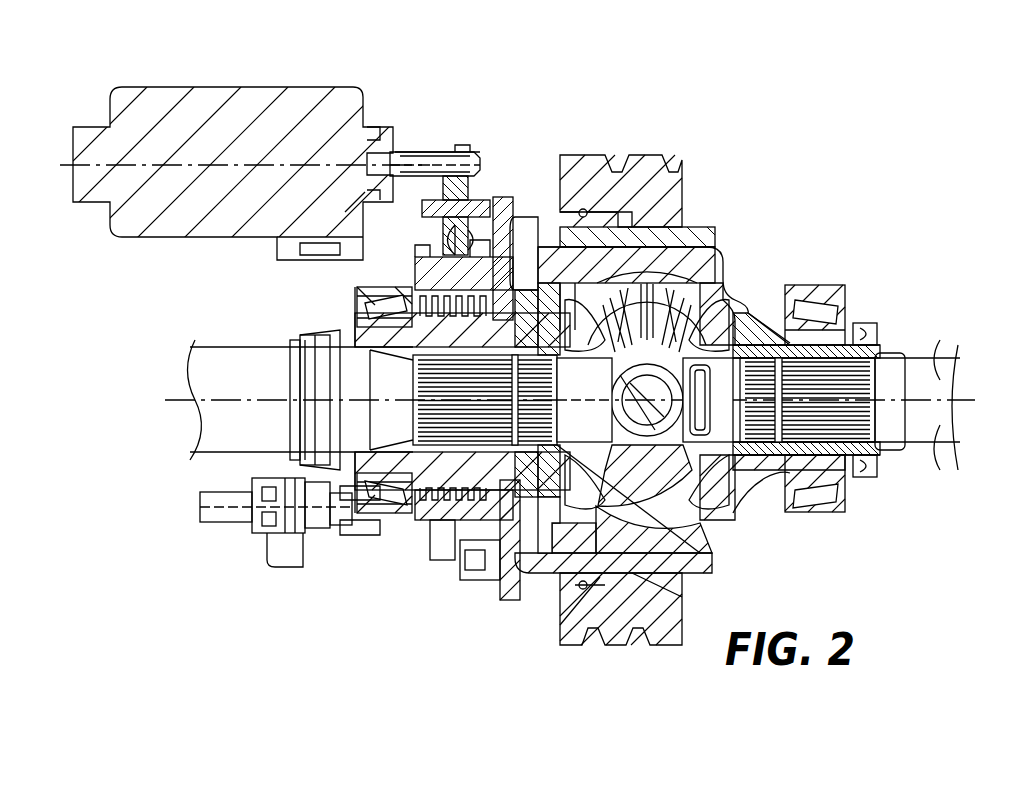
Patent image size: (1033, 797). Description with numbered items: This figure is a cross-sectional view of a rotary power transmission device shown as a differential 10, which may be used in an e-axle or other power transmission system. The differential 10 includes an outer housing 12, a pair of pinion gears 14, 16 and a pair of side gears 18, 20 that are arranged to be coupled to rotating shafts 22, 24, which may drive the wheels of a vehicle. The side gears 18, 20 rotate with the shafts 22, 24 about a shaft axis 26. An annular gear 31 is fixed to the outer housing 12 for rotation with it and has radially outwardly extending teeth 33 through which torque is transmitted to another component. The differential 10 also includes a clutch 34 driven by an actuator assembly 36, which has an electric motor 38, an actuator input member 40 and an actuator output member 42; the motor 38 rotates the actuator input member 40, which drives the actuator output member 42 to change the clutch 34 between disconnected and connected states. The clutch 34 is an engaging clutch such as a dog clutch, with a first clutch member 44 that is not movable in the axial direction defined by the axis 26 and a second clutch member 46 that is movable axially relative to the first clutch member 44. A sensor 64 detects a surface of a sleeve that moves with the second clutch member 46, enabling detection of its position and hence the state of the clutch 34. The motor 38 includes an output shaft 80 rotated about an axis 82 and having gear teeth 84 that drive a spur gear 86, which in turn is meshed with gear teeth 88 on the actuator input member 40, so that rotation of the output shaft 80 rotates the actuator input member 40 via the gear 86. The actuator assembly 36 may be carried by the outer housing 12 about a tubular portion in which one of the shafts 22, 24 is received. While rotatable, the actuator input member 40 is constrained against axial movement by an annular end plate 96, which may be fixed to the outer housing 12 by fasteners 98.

The differential 10 is at (793, 158).
The outer housing 12 is at (748, 310).
The pinion gear 14 is at (720, 305).
The pinion gear 16 is at (680, 500).
The side gear 18 is at (584, 462).
The side gear 20 is at (735, 455).
The shaft 22 is at (225, 368).
The shaft 24 is at (848, 380).
The shaft axis 26 is at (948, 424).
The annular gear 31 is at (672, 192).
The teeth 33 is at (655, 160).
The clutch 34 is at (548, 238).
The actuator assembly 36 is at (400, 104).
The electric motor 38 is at (215, 112).
The actuator input member 40 is at (440, 560).
The actuator output member 42 is at (430, 545).
The first clutch member 44 is at (690, 256).
The second clutch member 46 is at (573, 258).
The sensor 64 is at (263, 567).
The output shaft 80 is at (405, 155).
The axis 82 is at (420, 165).
The gear teeth 84 is at (460, 152).
The spur gear 86 is at (460, 192).
The gear teeth 88 is at (445, 234).
The annular end plate 96 is at (505, 590).
The fasteners 98 is at (470, 582).